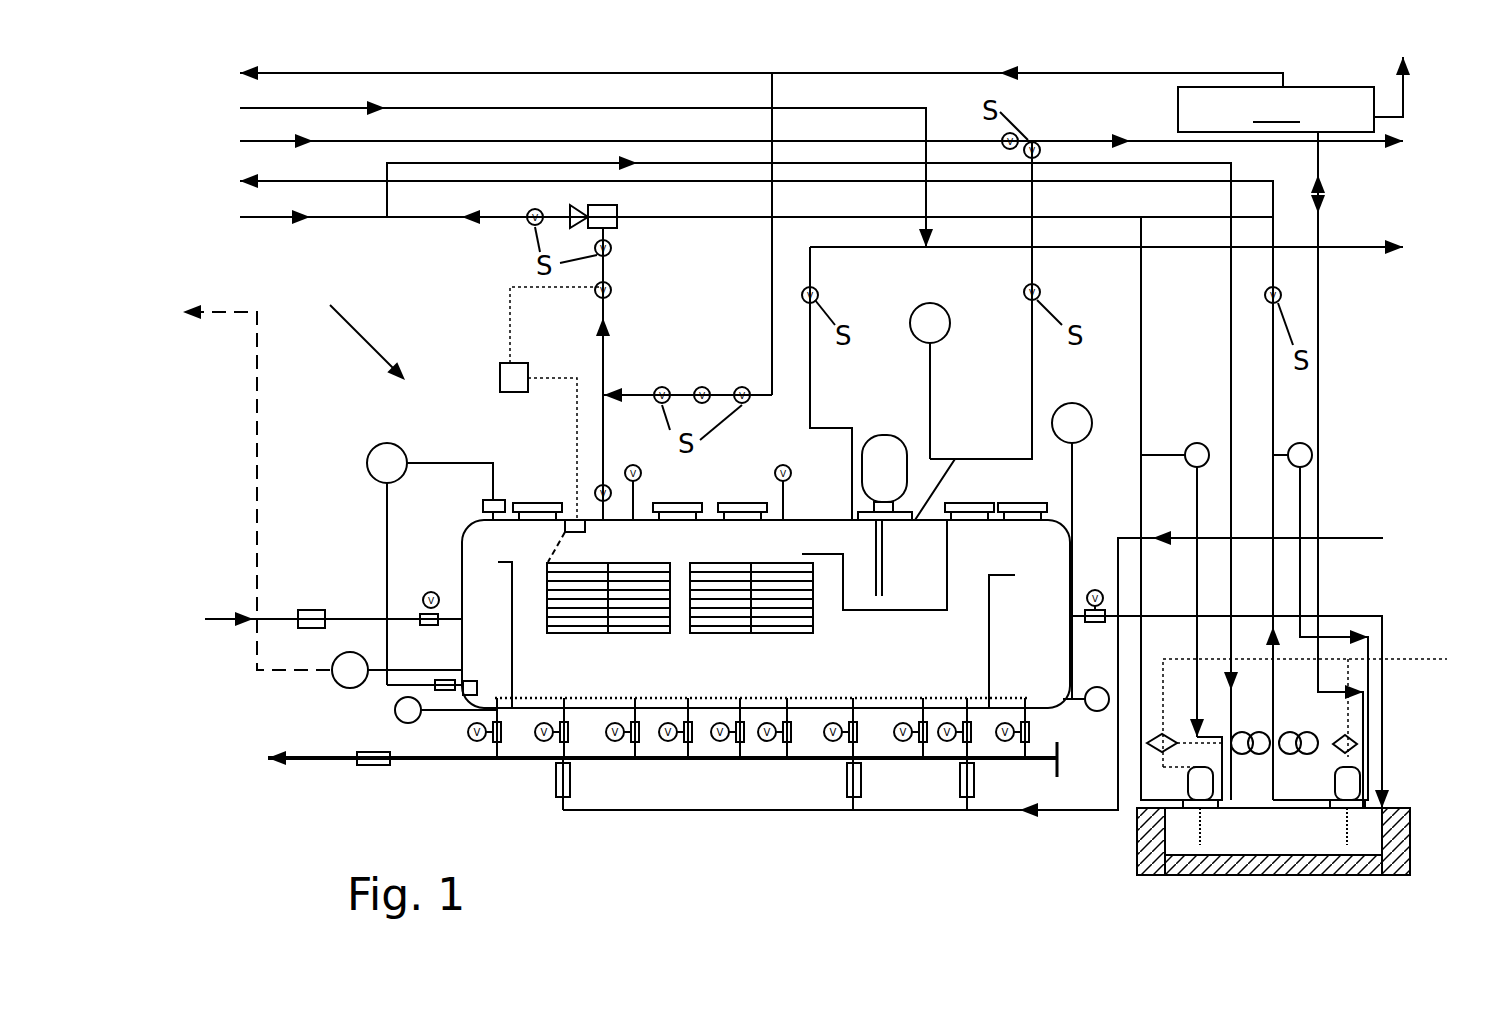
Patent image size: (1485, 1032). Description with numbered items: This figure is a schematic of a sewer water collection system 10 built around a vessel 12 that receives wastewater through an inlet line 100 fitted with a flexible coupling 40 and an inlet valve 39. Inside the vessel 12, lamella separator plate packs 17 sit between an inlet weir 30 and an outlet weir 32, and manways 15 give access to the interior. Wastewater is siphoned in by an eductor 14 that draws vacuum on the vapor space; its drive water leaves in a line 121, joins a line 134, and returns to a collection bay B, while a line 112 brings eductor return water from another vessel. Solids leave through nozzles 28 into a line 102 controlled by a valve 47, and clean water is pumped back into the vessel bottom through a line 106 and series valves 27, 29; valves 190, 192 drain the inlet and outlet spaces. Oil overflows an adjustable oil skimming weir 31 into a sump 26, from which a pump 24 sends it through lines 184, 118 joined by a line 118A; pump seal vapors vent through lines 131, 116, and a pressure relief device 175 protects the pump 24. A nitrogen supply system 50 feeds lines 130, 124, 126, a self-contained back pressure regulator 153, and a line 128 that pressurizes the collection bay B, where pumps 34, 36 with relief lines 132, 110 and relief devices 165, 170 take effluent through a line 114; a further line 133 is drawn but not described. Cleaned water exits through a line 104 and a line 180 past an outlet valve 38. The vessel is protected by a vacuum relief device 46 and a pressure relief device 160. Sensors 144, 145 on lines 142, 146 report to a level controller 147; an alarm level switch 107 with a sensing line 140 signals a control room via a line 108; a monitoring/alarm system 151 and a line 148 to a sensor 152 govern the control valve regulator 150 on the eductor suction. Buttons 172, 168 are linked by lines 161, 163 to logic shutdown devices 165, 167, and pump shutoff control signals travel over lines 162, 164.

The sewer water collection system 10 is at (683, 493).
The vessel 12 is at (460, 562).
The eductor 14 is at (600, 213).
The manways 15 is at (523, 518).
The lamella separator plate packs 17 is at (740, 632).
The pump 24 is at (890, 462).
The sump 26 is at (877, 613).
The valves 27 is at (967, 780).
The nozzles 28 is at (920, 727).
The valves 29 is at (572, 742).
The inlet weir 30 is at (512, 685).
The adjustable oil skimming weir 31 is at (840, 563).
The outlet weir 32 is at (987, 635).
The pump 34 is at (1199, 787).
The pump 36 is at (1343, 787).
The outlet valve 38 is at (1090, 625).
The inlet valve 39 is at (432, 615).
The flexible coupling 40 is at (312, 618).
The vessel vacuum relief device 46 is at (782, 466).
The valve 47 is at (368, 766).
The nitrogen supply system 50 is at (1276, 109).
The inlet line 100 is at (223, 617).
The line 102 is at (340, 760).
The line 104 is at (1078, 613).
The line 106 is at (790, 813).
The alarm device level switch 107 is at (345, 682).
The line 108 is at (235, 484).
The line 110 is at (1300, 490).
The line 112 is at (762, 215).
The line 114 is at (1353, 207).
The line 116 is at (1360, 175).
The line 118 is at (1333, 250).
The line 118A is at (549, 170).
The line 121 is at (402, 218).
The line 124 is at (772, 92).
The line 126 is at (590, 76).
The line 128 is at (1318, 418).
The line 130 is at (1030, 73).
The line 131 is at (1033, 262).
The line 132 is at (1197, 490).
The line 133 is at (1405, 93).
The line 134 is at (550, 160).
The vessel sensing line 140 is at (412, 676).
The line 142 is at (385, 505).
The sensor 144 is at (477, 687).
The sensor 145 is at (487, 505).
The line 146 is at (440, 455).
The level controller 147 is at (378, 457).
The line 148 is at (577, 405).
The control valve regulator 150 is at (612, 292).
The monitoring/alarm system 151 is at (508, 385).
The sensor 152 is at (585, 530).
The self-contained back pressure regulator 153 is at (703, 388).
The pressure relief device 160 is at (1065, 410).
The line 161 is at (1193, 747).
The lines 162 is at (1410, 658).
The line 163 is at (1323, 745).
The line 164 is at (1187, 658).
The logic shutdown device 165 is at (1193, 443).
The logic shutdown device 167 is at (1353, 740).
The button 168 is at (1307, 753).
The pressure relief device 170 is at (1295, 445).
The button 172 is at (1247, 757).
The pressure relief device 175 is at (925, 320).
The line 180 is at (1385, 743).
The line 184 is at (812, 370).
The valve 190 is at (410, 724).
The valve 192 is at (1087, 692).
The collection bay B is at (1137, 840).